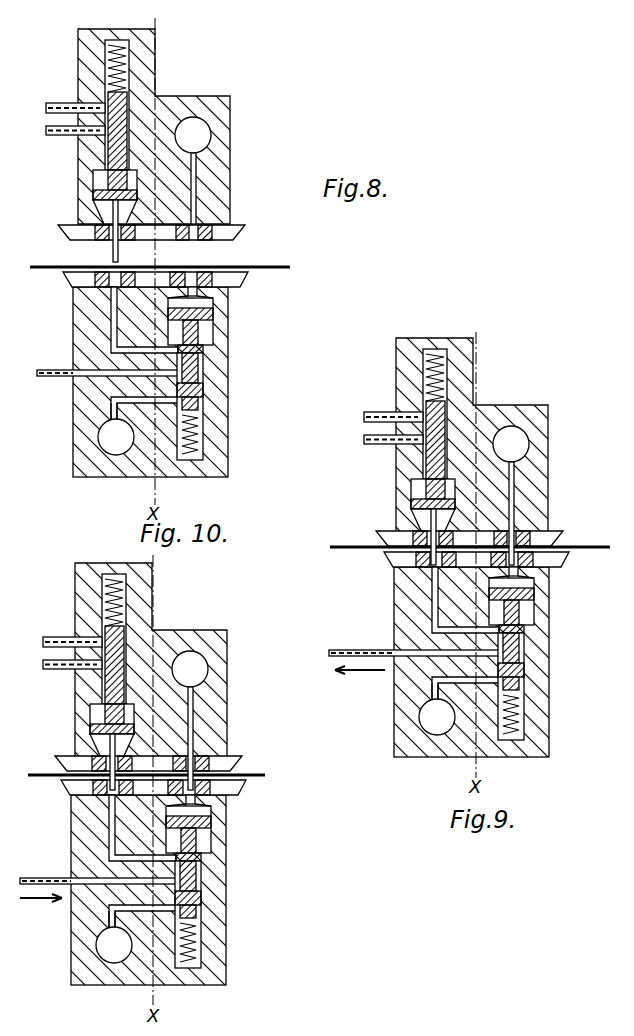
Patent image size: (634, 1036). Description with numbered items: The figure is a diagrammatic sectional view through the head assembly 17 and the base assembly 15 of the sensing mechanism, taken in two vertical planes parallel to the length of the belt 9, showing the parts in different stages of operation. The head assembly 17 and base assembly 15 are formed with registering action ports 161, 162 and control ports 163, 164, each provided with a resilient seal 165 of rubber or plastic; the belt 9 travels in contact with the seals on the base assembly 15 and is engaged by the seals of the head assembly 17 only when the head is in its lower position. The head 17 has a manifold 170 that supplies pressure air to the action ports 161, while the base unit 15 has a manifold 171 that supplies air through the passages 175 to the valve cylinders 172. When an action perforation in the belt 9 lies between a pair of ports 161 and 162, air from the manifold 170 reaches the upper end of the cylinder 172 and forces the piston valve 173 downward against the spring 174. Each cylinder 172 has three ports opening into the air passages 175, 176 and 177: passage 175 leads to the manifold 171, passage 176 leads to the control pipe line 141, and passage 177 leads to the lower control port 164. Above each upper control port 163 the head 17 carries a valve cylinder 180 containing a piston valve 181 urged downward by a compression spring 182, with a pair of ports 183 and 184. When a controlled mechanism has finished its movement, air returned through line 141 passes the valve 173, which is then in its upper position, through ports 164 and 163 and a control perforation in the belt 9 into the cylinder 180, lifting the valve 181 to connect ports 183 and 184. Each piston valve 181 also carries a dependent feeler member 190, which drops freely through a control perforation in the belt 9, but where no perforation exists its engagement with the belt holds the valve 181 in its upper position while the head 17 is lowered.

In FIG. 8, the belt 9 is at (250, 262).
In FIG. 9, the belt 9 is at (470, 530).
In FIG. 10, the belt 9 is at (146, 755).
In FIG. 8, the base assembly 15 is at (218, 368).
In FIG. 9, the base assembly 15 is at (488, 662).
In FIG. 10, the base assembly 15 is at (164, 890).
In FIG. 8, the head assembly 17 is at (222, 150).
In FIG. 9, the head assembly 17 is at (480, 435).
In FIG. 10, the head assembly 17 is at (165, 660).
In FIG. 8, the control pipe line 141 is at (107, 362).
In FIG. 9, the control pipe line 141 is at (414, 645).
In FIG. 10, the control pipe line 141 is at (98, 869).
In FIG. 8, the action port 161 is at (198, 222).
In FIG. 9, the action port 161 is at (544, 513).
In FIG. 10, the action port 161 is at (224, 738).
In FIG. 8, the action port 162 is at (218, 293).
In FIG. 9, the action port 162 is at (539, 592).
In FIG. 10, the action port 162 is at (215, 822).
In FIG. 8, the upper control port 163 is at (100, 222).
In FIG. 9, the upper control port 163 is at (406, 521).
In FIG. 10, the upper control port 163 is at (84, 738).
In FIG. 8, the lower control port 164 is at (112, 289).
In FIG. 9, the lower control port 164 is at (458, 562).
In FIG. 10, the lower control port 164 is at (139, 802).
In FIG. 8, the seal 165 is at (66, 228).
In FIG. 9, the seal 165 is at (469, 538).
In FIG. 10, the seal 165 is at (148, 763).
In FIG. 8, the manifold 170 is at (210, 132).
In FIG. 9, the manifold 170 is at (513, 416).
In FIG. 10, the manifold 170 is at (215, 652).
In FIG. 8, the manifold 171 is at (100, 425).
In FIG. 9, the manifold 171 is at (405, 717).
In FIG. 10, the manifold 171 is at (82, 945).
In FIG. 8, the valve cylinder 172 is at (198, 418).
In FIG. 9, the valve cylinder 172 is at (540, 682).
In FIG. 10, the valve cylinder 172 is at (217, 910).
In FIG. 8, the piston valve 173 is at (201, 332).
In FIG. 9, the piston valve 173 is at (543, 662).
In FIG. 10, the piston valve 173 is at (220, 866).
In FIG. 8, the spring 174 is at (194, 434).
In FIG. 9, the spring 174 is at (542, 721).
In FIG. 10, the spring 174 is at (220, 942).
In FIG. 8, the air passage 175 is at (112, 403).
In FIG. 9, the air passage 175 is at (380, 694).
In FIG. 10, the air passage 175 is at (74, 925).
In FIG. 8, the air passage 176 is at (105, 370).
In FIG. 9, the air passage 176 is at (427, 686).
In FIG. 10, the air passage 176 is at (104, 914).
In FIG. 8, the air passage 177 is at (120, 307).
In FIG. 9, the air passage 177 is at (423, 600).
In FIG. 10, the air passage 177 is at (94, 828).
In FIG. 8, the valve cylinder 180 is at (100, 182).
In FIG. 9, the valve cylinder 180 is at (406, 430).
In FIG. 10, the valve cylinder 180 is at (158, 667).
In FIG. 8, the piston valve 181 is at (110, 145).
In FIG. 9, the piston valve 181 is at (401, 440).
In FIG. 10, the piston valve 181 is at (155, 646).
In FIG. 8, the compression spring 182 is at (108, 52).
In FIG. 9, the compression spring 182 is at (435, 414).
In FIG. 10, the compression spring 182 is at (80, 634).
In FIG. 8, the port 183 is at (90, 105).
In FIG. 9, the port 183 is at (390, 400).
In FIG. 10, the port 183 is at (68, 618).
In FIG. 8, the port 184 is at (100, 132).
In FIG. 9, the port 184 is at (375, 446).
In FIG. 10, the port 184 is at (68, 677).
In FIG. 8, the feeler member 190 is at (113, 248).
In FIG. 9, the feeler member 190 is at (396, 522).
In FIG. 10, the feeler member 190 is at (75, 744).